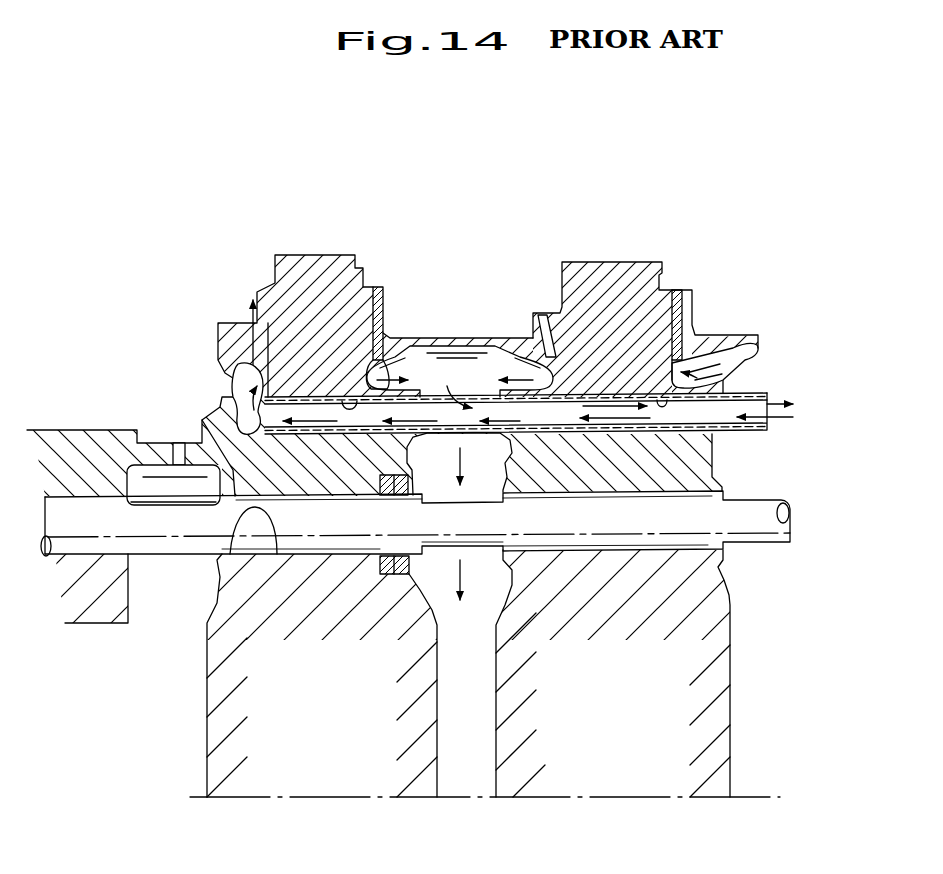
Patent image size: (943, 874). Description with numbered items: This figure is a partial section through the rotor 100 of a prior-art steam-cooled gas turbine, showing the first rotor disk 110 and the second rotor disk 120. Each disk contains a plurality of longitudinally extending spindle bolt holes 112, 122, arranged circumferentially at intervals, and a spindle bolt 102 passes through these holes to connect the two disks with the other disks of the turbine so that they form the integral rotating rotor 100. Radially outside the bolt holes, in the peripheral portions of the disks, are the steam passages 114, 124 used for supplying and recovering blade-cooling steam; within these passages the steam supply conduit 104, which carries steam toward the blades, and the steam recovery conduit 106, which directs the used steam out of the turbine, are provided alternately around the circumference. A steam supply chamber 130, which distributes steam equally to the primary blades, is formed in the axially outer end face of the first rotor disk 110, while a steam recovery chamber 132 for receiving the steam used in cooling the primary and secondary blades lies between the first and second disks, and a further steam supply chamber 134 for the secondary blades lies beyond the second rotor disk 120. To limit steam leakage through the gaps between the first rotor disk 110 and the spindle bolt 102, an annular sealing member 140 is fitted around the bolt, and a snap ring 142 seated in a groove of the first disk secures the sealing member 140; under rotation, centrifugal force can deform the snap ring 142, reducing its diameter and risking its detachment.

The rotor 100 is at (478, 206).
The spindle bolt 102 is at (134, 528).
The steam supply conduit 104 is at (788, 367).
The steam recovery conduit 106 is at (560, 387).
The first rotor disk 110 is at (318, 255).
The spindle bolt hole 112 is at (230, 556).
The steam passage 114 is at (352, 398).
The second rotor disk 120 is at (621, 260).
The spindle bolt hole 122 is at (719, 570).
The steam passage 124 is at (665, 397).
The steam supply chamber 130 is at (223, 400).
The steam recovery chamber 132 is at (488, 347).
The steam supply chamber 134 is at (758, 345).
The annular sealing member 140 is at (392, 580).
The snap ring 142 is at (443, 615).